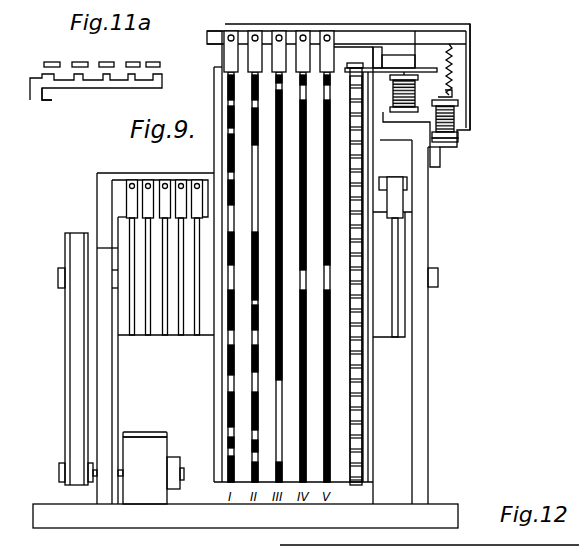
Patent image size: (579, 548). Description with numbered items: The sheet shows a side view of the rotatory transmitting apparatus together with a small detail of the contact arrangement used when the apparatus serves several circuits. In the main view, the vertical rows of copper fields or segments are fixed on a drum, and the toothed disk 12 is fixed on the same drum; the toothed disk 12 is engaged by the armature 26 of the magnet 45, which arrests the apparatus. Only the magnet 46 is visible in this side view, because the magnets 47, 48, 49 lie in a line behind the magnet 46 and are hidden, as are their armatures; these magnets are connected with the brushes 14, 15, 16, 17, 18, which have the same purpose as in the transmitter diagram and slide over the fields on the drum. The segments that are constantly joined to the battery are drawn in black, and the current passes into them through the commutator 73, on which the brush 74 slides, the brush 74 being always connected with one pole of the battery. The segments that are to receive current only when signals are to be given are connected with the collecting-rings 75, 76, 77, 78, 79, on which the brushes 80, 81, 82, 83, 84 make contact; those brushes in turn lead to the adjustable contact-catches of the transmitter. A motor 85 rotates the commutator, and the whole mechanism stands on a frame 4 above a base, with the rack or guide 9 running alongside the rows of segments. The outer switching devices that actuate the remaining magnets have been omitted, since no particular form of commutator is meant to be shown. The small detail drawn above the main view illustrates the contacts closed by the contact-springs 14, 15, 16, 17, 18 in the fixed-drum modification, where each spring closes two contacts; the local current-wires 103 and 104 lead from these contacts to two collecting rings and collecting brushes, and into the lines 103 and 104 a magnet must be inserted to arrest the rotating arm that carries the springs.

In FIG. 9, the frame 4 is at (470, 105).
In FIG. 9, the rack 9 is at (362, 430).
In FIG. 9, the toothed disk 12 is at (362, 384).
In FIG. 11A, the brush 14 is at (55, 55).
In FIG. 9, the brush 14 is at (233, 243).
In FIG. 11A, the brush 15 is at (82, 55).
In FIG. 9, the brush 15 is at (257, 243).
In FIG. 11A, the brush 16 is at (109, 55).
In FIG. 9, the brush 16 is at (281, 243).
In FIG. 11A, the brush 17 is at (135, 55).
In FIG. 9, the brush 17 is at (305, 243).
In FIG. 11A, the spring 18 is at (155, 55).
In FIG. 9, the spring 18 is at (329, 243).
In FIG. 9, the armature 26 is at (402, 100).
In FIG. 9, the magnet 45 is at (416, 70).
In FIG. 9, the magnet 46 is at (455, 125).
In FIG. 9, the magnet 47 is at (445, 103).
In FIG. 9, the magnet 48 is at (445, 135).
In FIG. 9, the magnet 49 is at (445, 140).
In FIG. 9, the commutator 73 is at (394, 337).
In FIG. 9, the brush 74 is at (390, 187).
In FIG. 9, the collecting-ring 75 is at (132, 337).
In FIG. 9, the collecting-ring 76 is at (148, 337).
In FIG. 9, the collecting-ring 77 is at (165, 337).
In FIG. 9, the collecting-ring 78 is at (181, 337).
In FIG. 9, the collecting-ring 79 is at (197, 337).
In FIG. 9, the brush 80 is at (132, 183).
In FIG. 9, the brush 81 is at (148, 183).
In FIG. 9, the brush 82 is at (165, 183).
In FIG. 9, the brush 83 is at (181, 183).
In FIG. 9, the brush 84 is at (199, 188).
In FIG. 9, the motor 85 is at (151, 468).
In FIG. 11A, the local current-wire 103 is at (30, 100).
In FIG. 11A, the local current-wire 104 is at (55, 109).